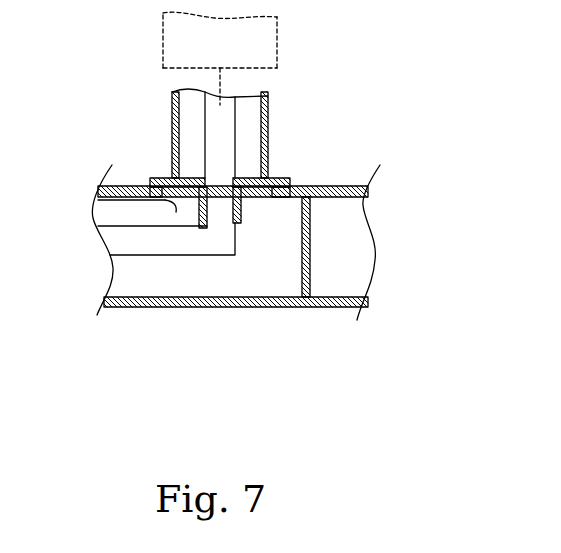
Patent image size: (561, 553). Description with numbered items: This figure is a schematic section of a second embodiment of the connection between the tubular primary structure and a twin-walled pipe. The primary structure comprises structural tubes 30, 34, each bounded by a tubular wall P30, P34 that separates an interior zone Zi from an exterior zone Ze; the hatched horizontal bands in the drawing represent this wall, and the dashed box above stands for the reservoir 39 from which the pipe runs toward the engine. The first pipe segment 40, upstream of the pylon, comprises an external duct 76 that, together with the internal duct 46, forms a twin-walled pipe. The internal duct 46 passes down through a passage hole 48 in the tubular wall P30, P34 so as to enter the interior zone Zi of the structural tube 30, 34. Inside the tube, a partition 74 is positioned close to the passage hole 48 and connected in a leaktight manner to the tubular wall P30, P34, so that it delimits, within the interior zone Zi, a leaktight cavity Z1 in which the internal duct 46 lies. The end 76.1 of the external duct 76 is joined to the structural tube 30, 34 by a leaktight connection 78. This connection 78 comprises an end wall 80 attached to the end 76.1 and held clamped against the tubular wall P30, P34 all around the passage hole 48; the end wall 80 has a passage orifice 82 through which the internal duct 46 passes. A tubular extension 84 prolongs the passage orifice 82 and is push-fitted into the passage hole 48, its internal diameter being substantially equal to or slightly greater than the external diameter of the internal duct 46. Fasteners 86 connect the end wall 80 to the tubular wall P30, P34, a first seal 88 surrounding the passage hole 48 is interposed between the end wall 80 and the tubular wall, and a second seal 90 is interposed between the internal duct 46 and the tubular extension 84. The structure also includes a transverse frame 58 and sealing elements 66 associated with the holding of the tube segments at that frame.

The structural tube 30 is at (275, 258).
The structural tube 34 is at (331, 309).
The reservoir 39 is at (279, 24).
The first pipe segment 40 is at (267, 133).
The internal duct 46 is at (170, 235).
The passage hole 48 is at (246, 202).
The transverse frame 58 is at (158, 131).
The sealing element 66 is at (178, 117).
The partition 74 is at (313, 223).
The external duct 76 is at (170, 148).
The end of the external duct 76.1 is at (268, 173).
The leaktight connection 78 is at (100, 204).
The end wall 80 is at (150, 182).
The passage orifice 82 is at (222, 172).
The tubular extension 84 is at (198, 204).
The fasteners 86 is at (157, 176).
The first seal 88 is at (178, 190).
The second seal 90 is at (247, 205).
The tubular wall P30 is at (422, 169).
The tubular wall P34 is at (343, 187).
The exterior zone Ze is at (321, 164).
The leaktight cavity Z1 is at (287, 235).
The interior zone Zi is at (285, 266).